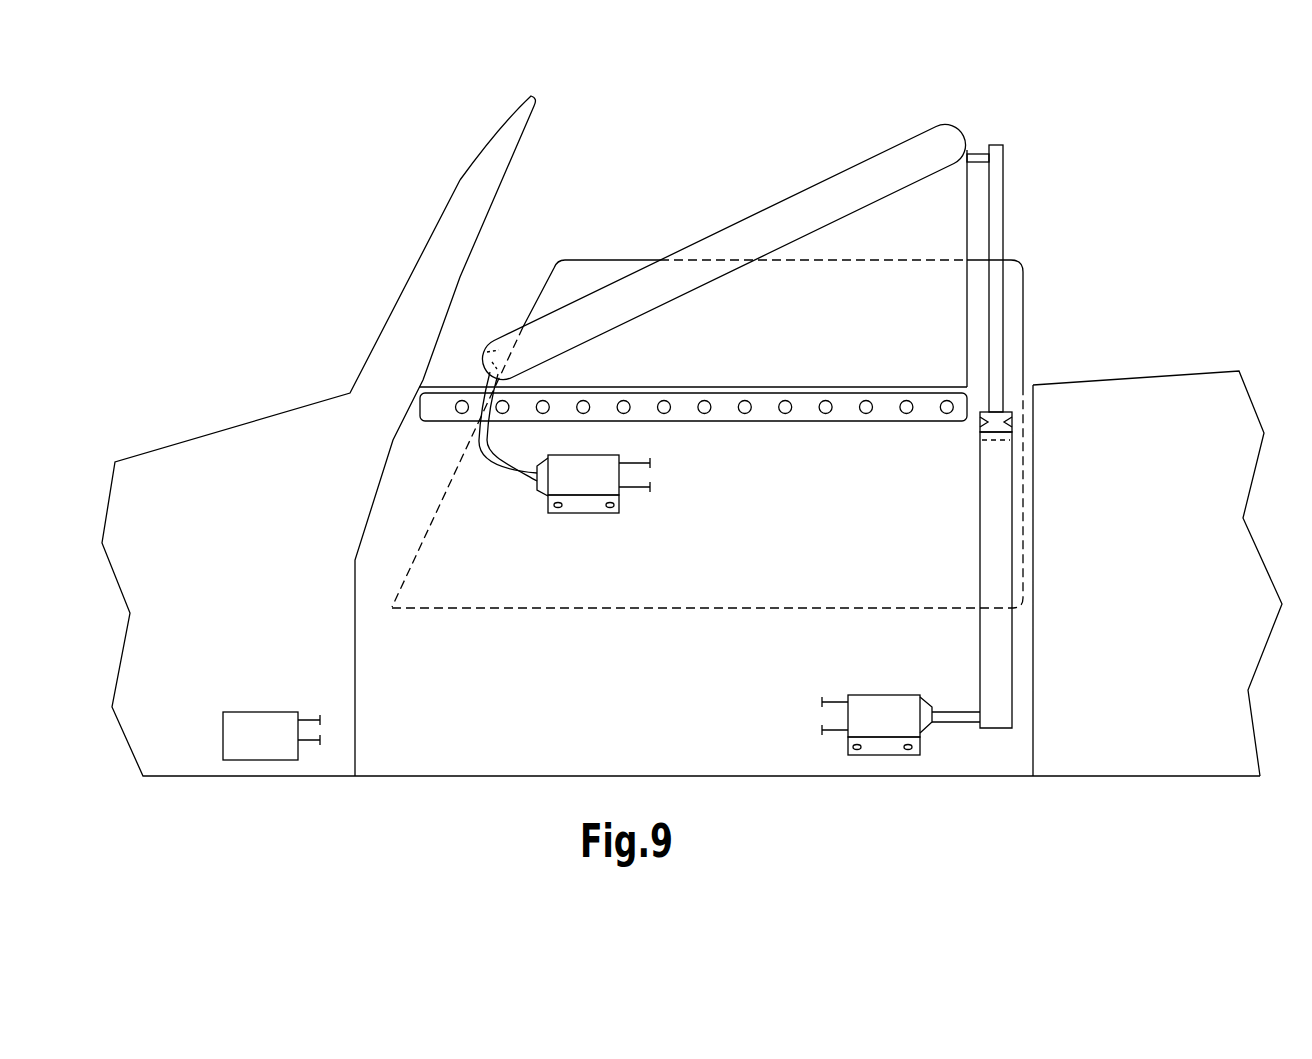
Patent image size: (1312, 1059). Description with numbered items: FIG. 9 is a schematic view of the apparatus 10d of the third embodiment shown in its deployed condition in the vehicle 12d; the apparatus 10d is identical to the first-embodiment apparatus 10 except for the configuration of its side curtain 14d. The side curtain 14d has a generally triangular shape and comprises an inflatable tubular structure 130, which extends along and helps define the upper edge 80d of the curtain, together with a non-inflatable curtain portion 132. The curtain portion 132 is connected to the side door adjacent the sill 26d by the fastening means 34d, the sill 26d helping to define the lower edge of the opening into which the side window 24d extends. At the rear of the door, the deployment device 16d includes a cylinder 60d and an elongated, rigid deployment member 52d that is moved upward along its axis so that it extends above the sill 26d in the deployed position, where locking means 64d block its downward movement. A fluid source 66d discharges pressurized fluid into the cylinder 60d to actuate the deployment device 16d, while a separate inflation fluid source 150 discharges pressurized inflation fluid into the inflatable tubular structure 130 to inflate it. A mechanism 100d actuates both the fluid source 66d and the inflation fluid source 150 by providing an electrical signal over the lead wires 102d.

The apparatus 10 is at (917, 117).
The apparatus 10d is at (1170, 193).
The vehicle 12d is at (336, 200).
The side curtain 14d is at (663, 330).
The deployment device 16d is at (995, 577).
The side window 24d is at (572, 283).
The sill 26d is at (708, 386).
The fastening means 34d is at (745, 414).
The deployment member 52d is at (1003, 193).
The cylinder 60d is at (1005, 660).
The locking means 64d is at (1012, 421).
The fluid source 66d is at (887, 702).
The upper edge 80d is at (708, 236).
The actuation mechanism 100d is at (245, 720).
The lead wires 102d is at (322, 742).
The inflatable tubular structure 130 is at (600, 305).
The non-inflatable curtain portion 132 is at (937, 299).
The inflation fluid source 150 is at (580, 487).